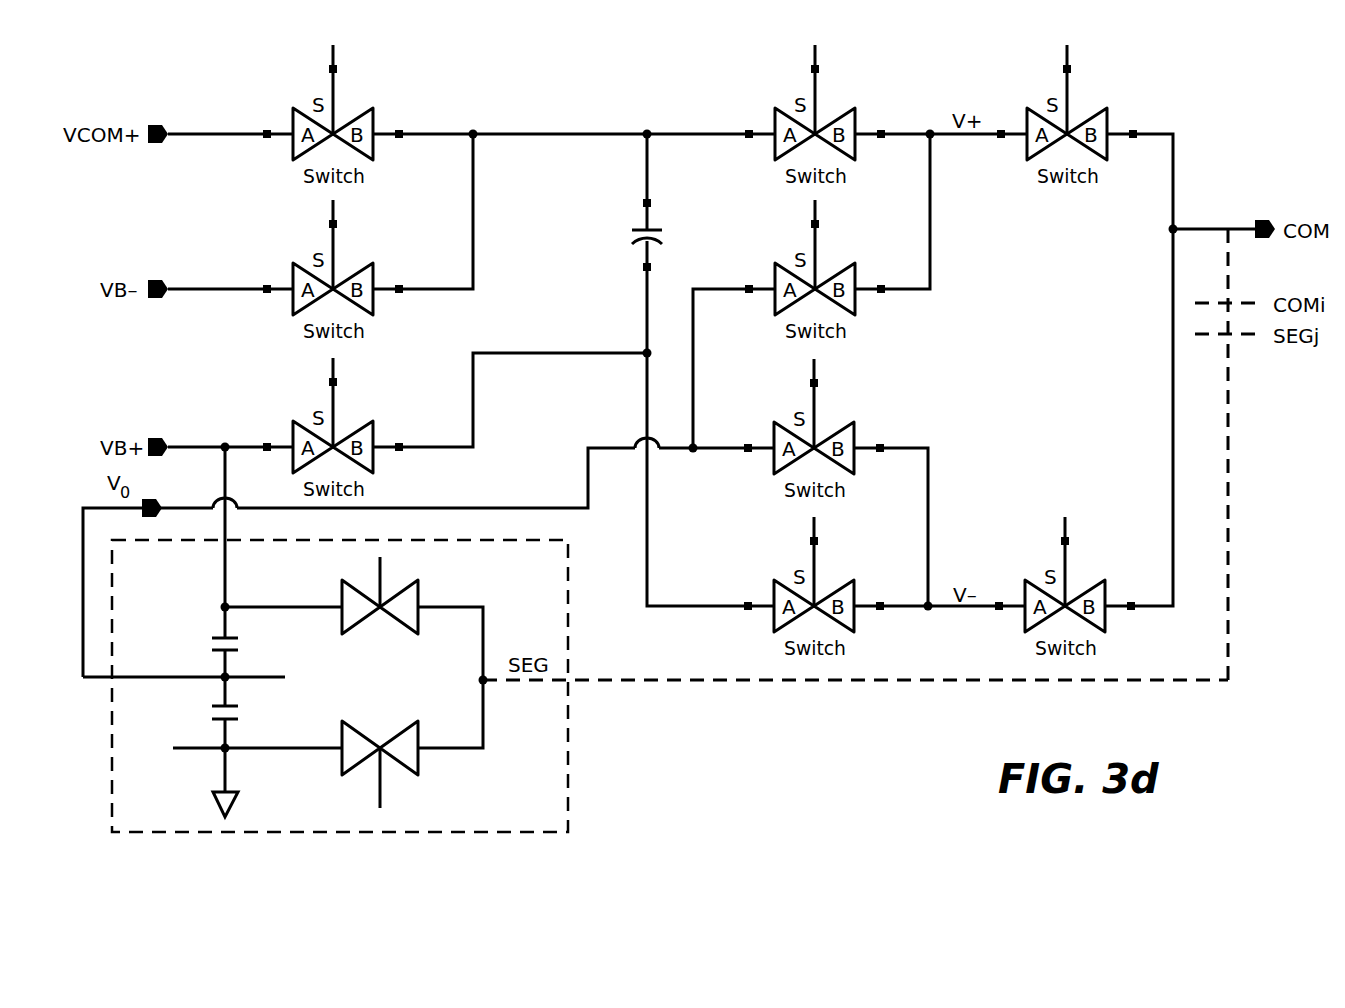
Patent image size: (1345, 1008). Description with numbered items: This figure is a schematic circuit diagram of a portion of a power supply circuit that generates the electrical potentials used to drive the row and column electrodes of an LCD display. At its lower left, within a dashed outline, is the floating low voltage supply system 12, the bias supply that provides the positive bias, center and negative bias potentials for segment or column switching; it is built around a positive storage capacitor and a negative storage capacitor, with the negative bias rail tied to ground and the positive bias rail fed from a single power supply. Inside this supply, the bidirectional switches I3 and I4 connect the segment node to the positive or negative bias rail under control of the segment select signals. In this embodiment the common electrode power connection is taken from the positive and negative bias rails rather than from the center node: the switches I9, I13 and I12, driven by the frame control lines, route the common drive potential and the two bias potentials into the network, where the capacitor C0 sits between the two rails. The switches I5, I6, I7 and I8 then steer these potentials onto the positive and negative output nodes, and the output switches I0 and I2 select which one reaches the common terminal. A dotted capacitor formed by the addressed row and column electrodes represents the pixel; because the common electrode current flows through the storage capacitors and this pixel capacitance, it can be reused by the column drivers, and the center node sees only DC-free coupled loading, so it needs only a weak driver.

The floating low voltage supply system 12 is at (309, 639).
The switch I9 is at (333, 114).
The switch I13 is at (333, 269).
The switch I12 is at (333, 427).
The switch I5 is at (815, 114).
The switch I6 is at (815, 269).
The switch I7 is at (814, 428).
The switch I8 is at (814, 586).
The switch I0 is at (1067, 115).
The switch I2 is at (1065, 587).
The switch I3 is at (399, 603).
The switch I4 is at (396, 760).
The capacitor C0 is at (628, 235).